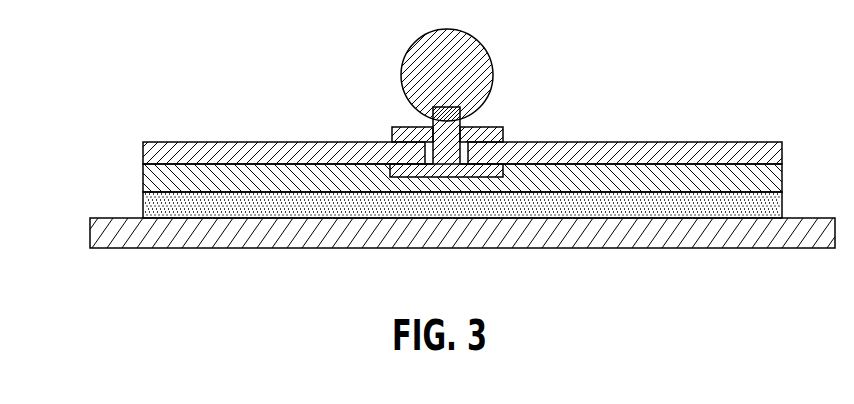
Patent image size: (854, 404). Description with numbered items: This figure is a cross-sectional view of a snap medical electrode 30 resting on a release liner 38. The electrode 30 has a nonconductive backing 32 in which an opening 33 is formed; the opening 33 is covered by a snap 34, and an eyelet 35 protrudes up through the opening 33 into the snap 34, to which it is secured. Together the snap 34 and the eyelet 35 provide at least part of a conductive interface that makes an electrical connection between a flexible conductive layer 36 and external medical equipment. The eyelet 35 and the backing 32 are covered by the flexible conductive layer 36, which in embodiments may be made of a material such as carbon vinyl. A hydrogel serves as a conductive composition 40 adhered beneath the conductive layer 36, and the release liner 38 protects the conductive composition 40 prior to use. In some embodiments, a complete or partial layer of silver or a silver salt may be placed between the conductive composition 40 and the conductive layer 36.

The snap medical electrode 30 is at (726, 78).
The nonconductive backing 32 is at (592, 143).
The opening 33 is at (430, 152).
The snap 34 is at (480, 73).
The eyelet 35 is at (455, 122).
The flexible conductive layer 36 is at (143, 183).
The release liner 38 is at (90, 234).
The conductive composition 40 is at (782, 206).